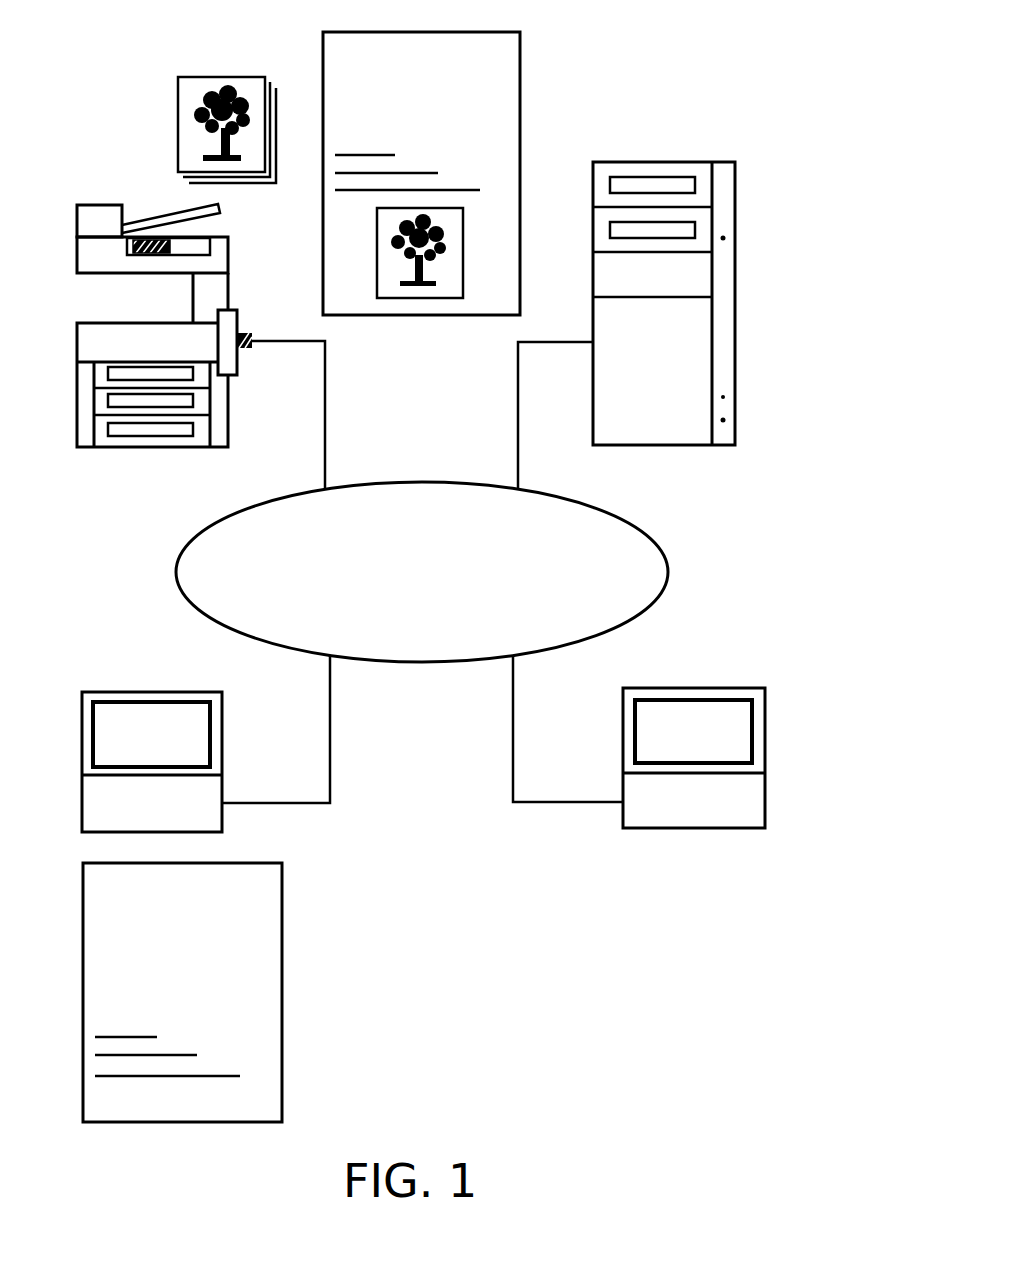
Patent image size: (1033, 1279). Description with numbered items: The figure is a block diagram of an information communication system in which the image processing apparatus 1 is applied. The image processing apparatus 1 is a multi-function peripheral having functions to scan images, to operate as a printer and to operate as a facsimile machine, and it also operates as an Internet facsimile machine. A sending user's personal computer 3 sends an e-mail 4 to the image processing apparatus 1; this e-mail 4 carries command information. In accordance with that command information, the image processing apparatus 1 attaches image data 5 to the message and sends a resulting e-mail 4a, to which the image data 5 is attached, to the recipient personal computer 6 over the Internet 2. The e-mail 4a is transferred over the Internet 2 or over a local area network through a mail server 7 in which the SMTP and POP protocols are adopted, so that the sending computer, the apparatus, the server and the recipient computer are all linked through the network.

The image processing apparatus 1 is at (70, 277).
The Internet 2 is at (423, 482).
The sending user's personal computer 3 is at (77, 707).
The e-mail 4 is at (282, 1083).
The e-mail 4a is at (520, 95).
The image data 5 is at (178, 102).
The recipient personal computer 6 is at (772, 700).
The mail server 7 is at (723, 188).